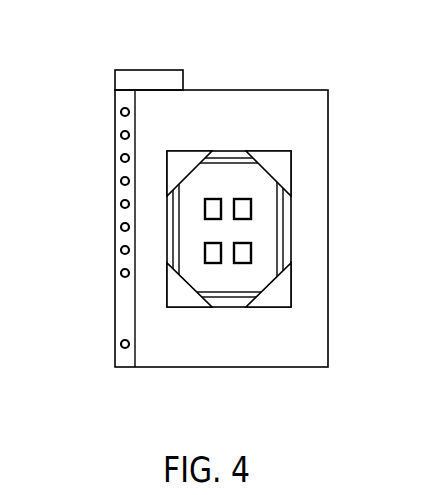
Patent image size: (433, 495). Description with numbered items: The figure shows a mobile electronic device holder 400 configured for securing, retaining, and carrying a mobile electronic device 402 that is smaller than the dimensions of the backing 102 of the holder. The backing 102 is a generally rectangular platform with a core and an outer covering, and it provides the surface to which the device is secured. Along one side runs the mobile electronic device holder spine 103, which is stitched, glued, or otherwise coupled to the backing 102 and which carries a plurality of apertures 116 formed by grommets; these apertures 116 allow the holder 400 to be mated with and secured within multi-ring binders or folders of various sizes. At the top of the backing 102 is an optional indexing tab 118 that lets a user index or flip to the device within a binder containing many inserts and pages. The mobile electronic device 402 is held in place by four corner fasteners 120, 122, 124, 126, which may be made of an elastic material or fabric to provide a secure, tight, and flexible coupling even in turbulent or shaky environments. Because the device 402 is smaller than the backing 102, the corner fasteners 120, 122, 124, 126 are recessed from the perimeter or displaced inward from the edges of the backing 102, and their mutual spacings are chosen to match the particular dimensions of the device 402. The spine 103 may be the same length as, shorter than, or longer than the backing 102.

The mobile electronic device holder 400 is at (255, 90).
The indexing tab 118 is at (162, 70).
The backing 102 is at (249, 115).
The apertures 116 is at (121, 135).
The mobile electronic device 402 is at (268, 242).
The corner fastener 122 is at (195, 160).
The corner fastener 124 is at (270, 158).
The corner fastener 120 is at (188, 294).
The corner fastener 126 is at (272, 294).
The mobile electronic device holder spine 103 is at (124, 386).